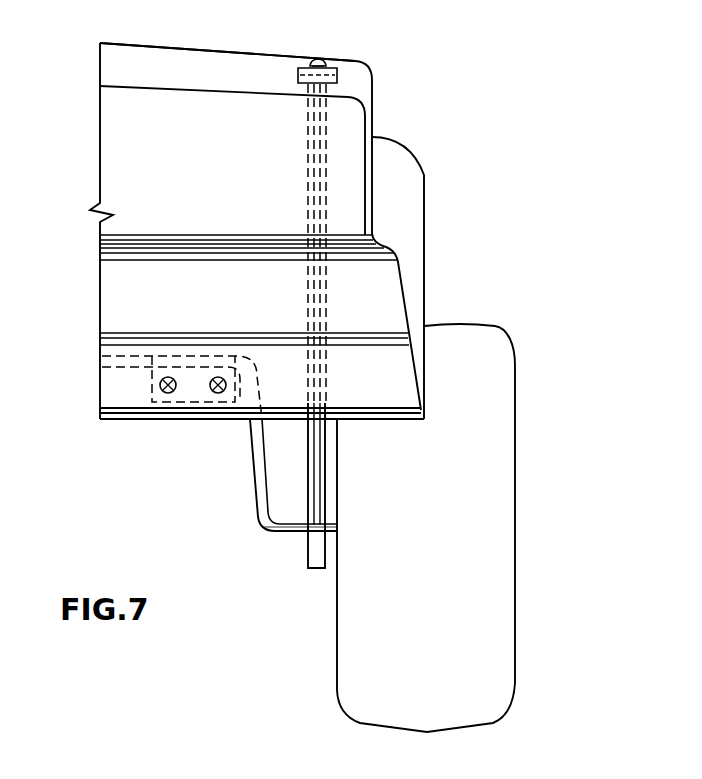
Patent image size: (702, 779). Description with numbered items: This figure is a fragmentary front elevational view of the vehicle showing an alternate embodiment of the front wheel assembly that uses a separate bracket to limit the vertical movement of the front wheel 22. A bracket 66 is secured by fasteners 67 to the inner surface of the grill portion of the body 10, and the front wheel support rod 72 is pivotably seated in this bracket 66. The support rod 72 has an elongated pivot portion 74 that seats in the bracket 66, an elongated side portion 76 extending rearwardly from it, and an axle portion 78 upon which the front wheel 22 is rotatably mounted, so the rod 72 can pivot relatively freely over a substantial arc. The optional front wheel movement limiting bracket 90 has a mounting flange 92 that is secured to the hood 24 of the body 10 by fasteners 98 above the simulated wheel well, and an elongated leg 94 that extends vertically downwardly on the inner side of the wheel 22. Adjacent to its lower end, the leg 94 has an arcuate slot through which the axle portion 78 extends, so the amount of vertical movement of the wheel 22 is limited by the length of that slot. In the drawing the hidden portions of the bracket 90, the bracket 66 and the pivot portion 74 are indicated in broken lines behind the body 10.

The body 10 is at (377, 110).
The front wheel 22 is at (497, 413).
The hood 24 is at (250, 57).
The bracket 66 is at (150, 382).
The fasteners 67 is at (214, 394).
The front wheel support rod 72 is at (253, 470).
The pivot portion 74 is at (122, 368).
The side portion 76 is at (258, 497).
The axle portion 78 is at (286, 535).
The front wheel movement limiting bracket 90 is at (333, 300).
The mounting flange 92 is at (336, 67).
The elongated leg 94 is at (309, 553).
The fasteners 98 is at (318, 58).